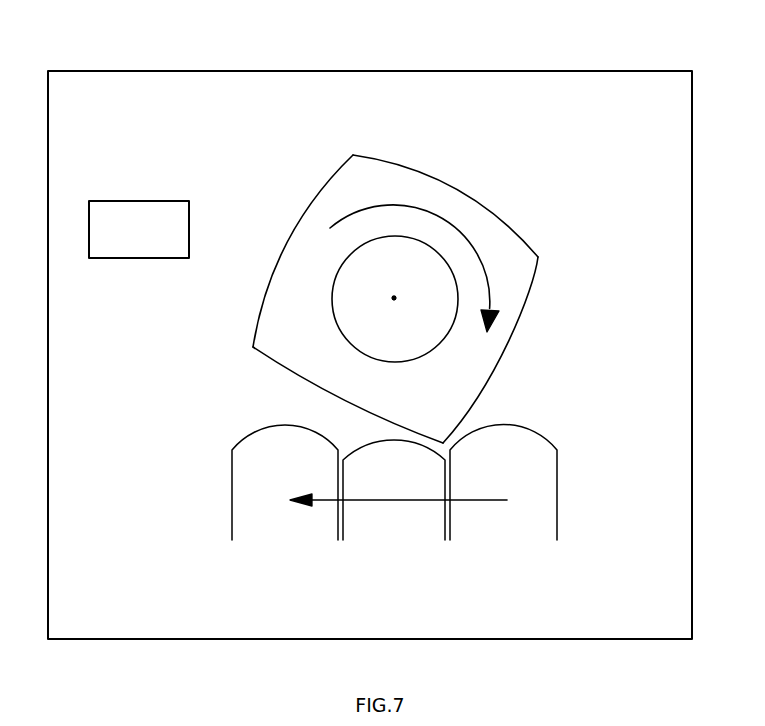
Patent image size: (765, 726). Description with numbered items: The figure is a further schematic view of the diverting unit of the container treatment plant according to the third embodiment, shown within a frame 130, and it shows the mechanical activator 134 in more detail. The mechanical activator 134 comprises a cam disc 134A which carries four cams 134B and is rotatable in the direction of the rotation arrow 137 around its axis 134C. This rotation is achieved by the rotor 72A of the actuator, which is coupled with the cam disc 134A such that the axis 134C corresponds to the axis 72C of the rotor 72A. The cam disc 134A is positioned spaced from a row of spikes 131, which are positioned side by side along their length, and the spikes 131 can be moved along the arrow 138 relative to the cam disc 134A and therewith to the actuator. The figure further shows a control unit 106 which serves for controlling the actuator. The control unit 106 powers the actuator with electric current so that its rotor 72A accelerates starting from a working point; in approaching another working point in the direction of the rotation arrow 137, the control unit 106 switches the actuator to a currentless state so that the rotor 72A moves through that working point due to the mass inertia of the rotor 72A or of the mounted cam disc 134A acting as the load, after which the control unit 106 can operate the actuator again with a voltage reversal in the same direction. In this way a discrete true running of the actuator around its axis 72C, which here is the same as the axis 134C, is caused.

The display screen / user interface 130 is at (654, 74).
The control unit 106 is at (157, 203).
The mechanical activator 134 is at (400, 271).
The cam disc 134A is at (502, 230).
The cams 134B is at (348, 157).
The axis of the cam disc 134C is at (287, 316).
The rotation arrow 137 is at (414, 256).
The rotor 72A is at (337, 277).
The axis of the rotor 72C is at (394, 298).
The arrow 138 is at (399, 491).
The spikes 131 is at (290, 528).